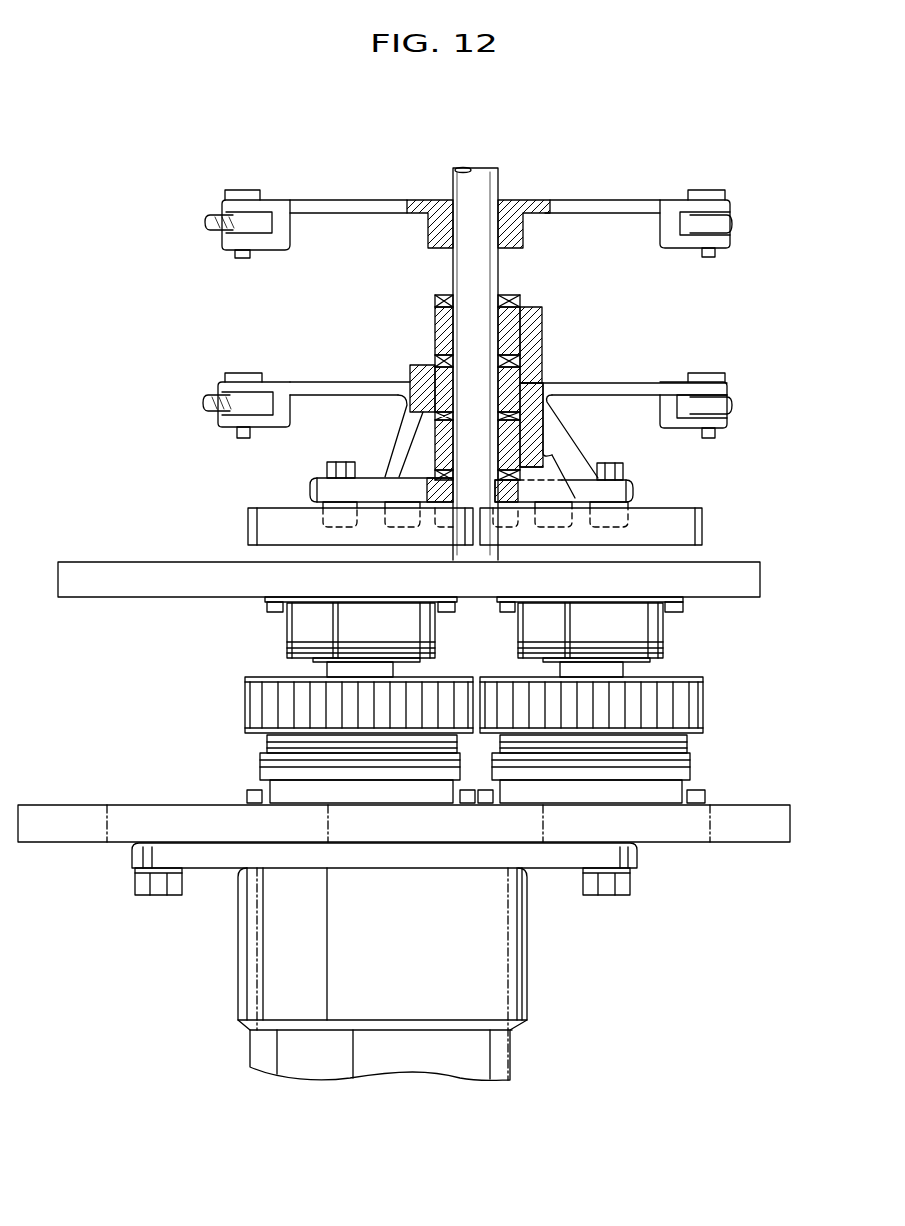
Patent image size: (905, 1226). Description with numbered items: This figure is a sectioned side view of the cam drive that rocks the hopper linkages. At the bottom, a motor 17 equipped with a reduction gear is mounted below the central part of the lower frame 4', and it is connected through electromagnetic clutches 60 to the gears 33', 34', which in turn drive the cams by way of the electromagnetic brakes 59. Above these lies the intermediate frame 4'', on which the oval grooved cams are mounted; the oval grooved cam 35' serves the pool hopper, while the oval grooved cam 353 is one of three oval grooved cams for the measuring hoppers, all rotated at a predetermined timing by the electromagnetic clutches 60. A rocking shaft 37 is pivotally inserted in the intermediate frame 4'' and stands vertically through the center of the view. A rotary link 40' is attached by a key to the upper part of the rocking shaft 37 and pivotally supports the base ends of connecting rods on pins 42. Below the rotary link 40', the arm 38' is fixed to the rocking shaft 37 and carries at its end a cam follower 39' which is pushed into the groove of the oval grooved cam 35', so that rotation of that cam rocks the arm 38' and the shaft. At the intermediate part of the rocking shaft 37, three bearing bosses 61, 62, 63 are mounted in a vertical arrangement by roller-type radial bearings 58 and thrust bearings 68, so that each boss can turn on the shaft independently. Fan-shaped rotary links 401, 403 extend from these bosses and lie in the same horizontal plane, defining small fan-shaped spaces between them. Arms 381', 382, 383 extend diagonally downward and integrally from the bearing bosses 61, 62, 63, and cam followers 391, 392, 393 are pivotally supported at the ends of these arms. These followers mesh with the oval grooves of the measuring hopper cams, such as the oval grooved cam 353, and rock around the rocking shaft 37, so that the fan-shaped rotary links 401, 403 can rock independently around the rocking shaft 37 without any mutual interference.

The rocking shaft 37 is at (478, 183).
The rotary link 40' is at (329, 176).
The pin 42 is at (698, 198).
The thrust bearing 68 is at (517, 297).
The roller-type radial bearing 58 is at (440, 326).
The bearing boss 62 is at (530, 331).
The bearing boss 61 is at (418, 385).
The bearing boss 63 is at (545, 410).
The fan-shaped rotary link 401 is at (305, 383).
The fan-shaped rotary link 403 is at (645, 383).
The arm 383 is at (560, 425).
The arm 382 is at (550, 470).
The arm 381' is at (361, 436).
The arm 38' is at (308, 470).
The cam follower 39' is at (262, 500).
The oval grooved cam 35' is at (306, 526).
The intermediate frame 4'' is at (409, 546).
The cam follower 393 is at (630, 520).
The oval grooved cam 353 is at (703, 525).
The cam follower 391 is at (398, 522).
The cam follower 392 is at (560, 525).
The electromagnetic brake 59 is at (532, 628).
The gear 33' is at (311, 705).
The gear 34' is at (628, 705).
The electromagnetic clutch 60 is at (278, 768).
The lower frame 4' is at (404, 796).
The motor 17 is at (527, 965).